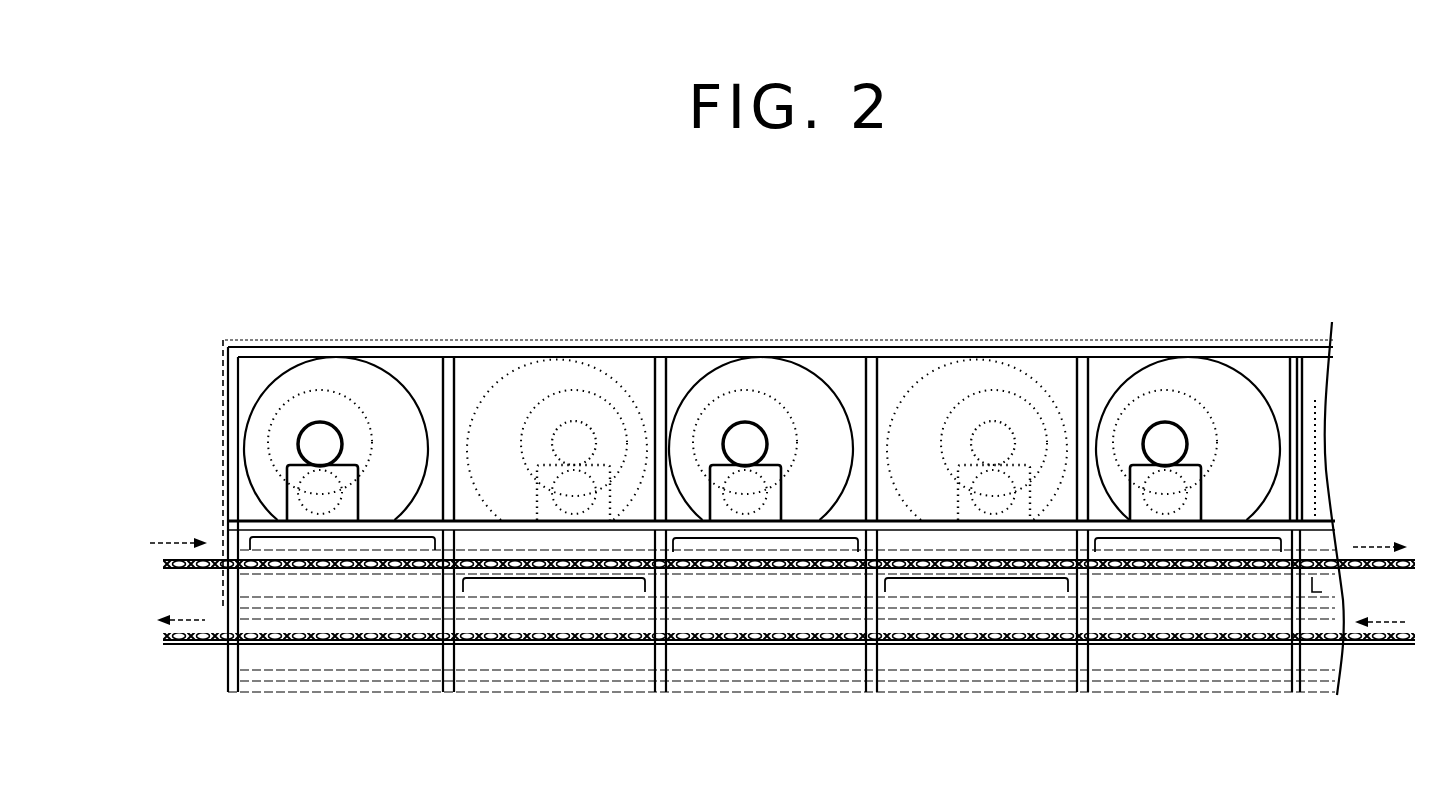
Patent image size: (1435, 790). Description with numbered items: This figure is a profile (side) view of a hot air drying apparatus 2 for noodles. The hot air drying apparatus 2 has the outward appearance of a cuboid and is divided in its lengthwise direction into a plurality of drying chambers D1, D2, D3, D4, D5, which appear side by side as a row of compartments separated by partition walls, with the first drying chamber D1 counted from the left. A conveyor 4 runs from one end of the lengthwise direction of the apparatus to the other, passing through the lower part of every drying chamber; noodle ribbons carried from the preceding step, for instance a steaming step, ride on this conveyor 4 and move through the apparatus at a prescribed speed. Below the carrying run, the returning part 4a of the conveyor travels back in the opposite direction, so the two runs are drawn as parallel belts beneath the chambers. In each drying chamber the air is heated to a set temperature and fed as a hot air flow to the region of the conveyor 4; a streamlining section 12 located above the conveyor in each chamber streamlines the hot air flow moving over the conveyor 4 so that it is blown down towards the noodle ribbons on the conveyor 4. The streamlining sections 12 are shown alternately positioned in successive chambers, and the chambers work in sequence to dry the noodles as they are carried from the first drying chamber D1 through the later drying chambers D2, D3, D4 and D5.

The hot air drying apparatus 2 is at (759, 492).
The conveyor 4 is at (154, 555).
The returning part of the conveyor 4a is at (190, 652).
The streamlining section 12 is at (270, 542).
The first drying chamber D1 is at (333, 362).
The second drying chamber D2 is at (557, 362).
The third drying chamber D3 is at (759, 362).
The fourth drying chamber D4 is at (977, 362).
The fifth drying chamber D5 is at (1182, 362).